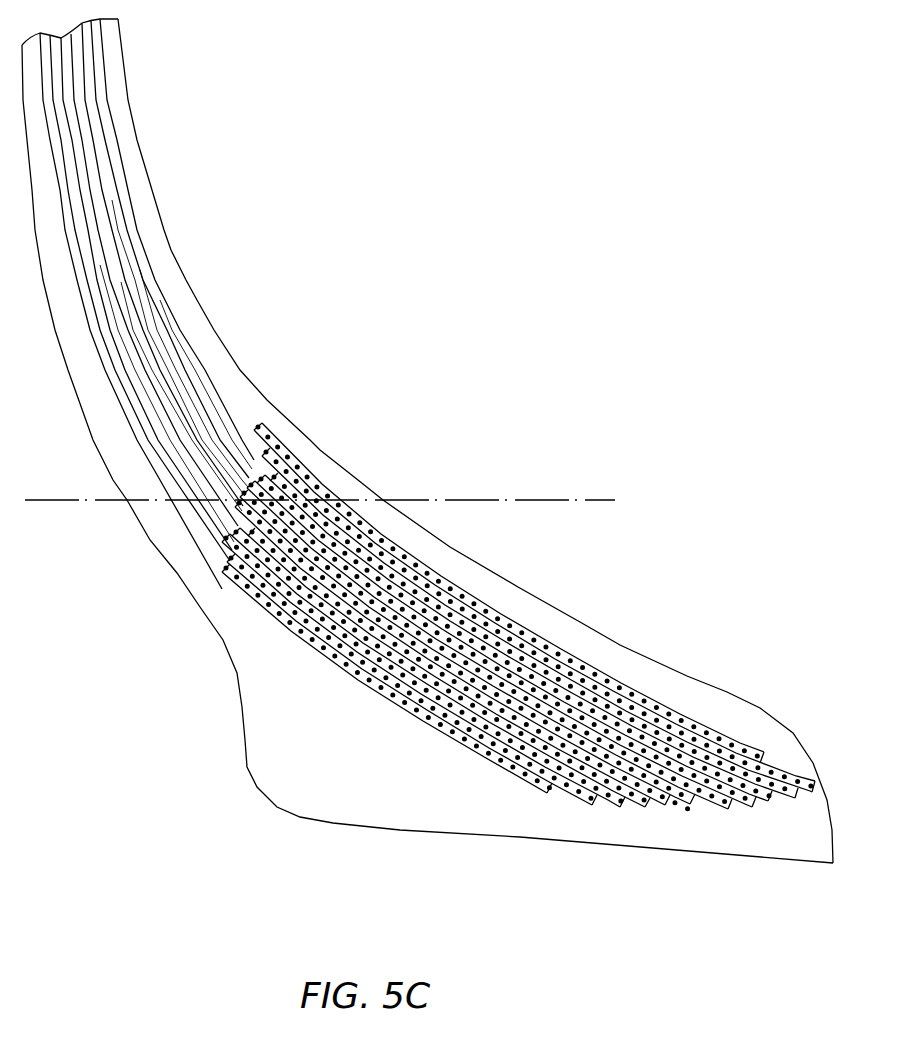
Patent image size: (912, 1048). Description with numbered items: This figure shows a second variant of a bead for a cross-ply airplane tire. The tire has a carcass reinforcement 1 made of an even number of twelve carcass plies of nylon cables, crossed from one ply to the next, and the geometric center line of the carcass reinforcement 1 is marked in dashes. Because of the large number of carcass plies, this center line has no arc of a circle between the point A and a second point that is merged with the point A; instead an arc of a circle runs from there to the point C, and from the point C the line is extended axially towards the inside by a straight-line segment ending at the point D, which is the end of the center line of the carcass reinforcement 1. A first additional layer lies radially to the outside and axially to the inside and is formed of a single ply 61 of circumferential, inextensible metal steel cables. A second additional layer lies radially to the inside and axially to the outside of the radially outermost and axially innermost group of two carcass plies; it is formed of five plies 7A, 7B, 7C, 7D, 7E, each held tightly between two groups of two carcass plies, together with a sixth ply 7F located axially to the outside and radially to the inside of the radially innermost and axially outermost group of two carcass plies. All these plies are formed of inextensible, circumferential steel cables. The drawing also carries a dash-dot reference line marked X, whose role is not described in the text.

The carcass reinforcement 1 is at (88, 162).
The single ply of the first additional layer 61 is at (315, 480).
The ply of the second additional layer 7A is at (405, 577).
The ply of the second additional layer 7B is at (523, 660).
The ply of the second additional layer 7C is at (582, 732).
The ply of the second additional layer 7D is at (590, 767).
The ply of the second additional layer 7E is at (285, 595).
The sixth ply of the second additional layer 7F is at (348, 668).
The point A is at (245, 498).
The point C is at (475, 678).
The point D is at (712, 805).
The axis X-X' X is at (320, 518).